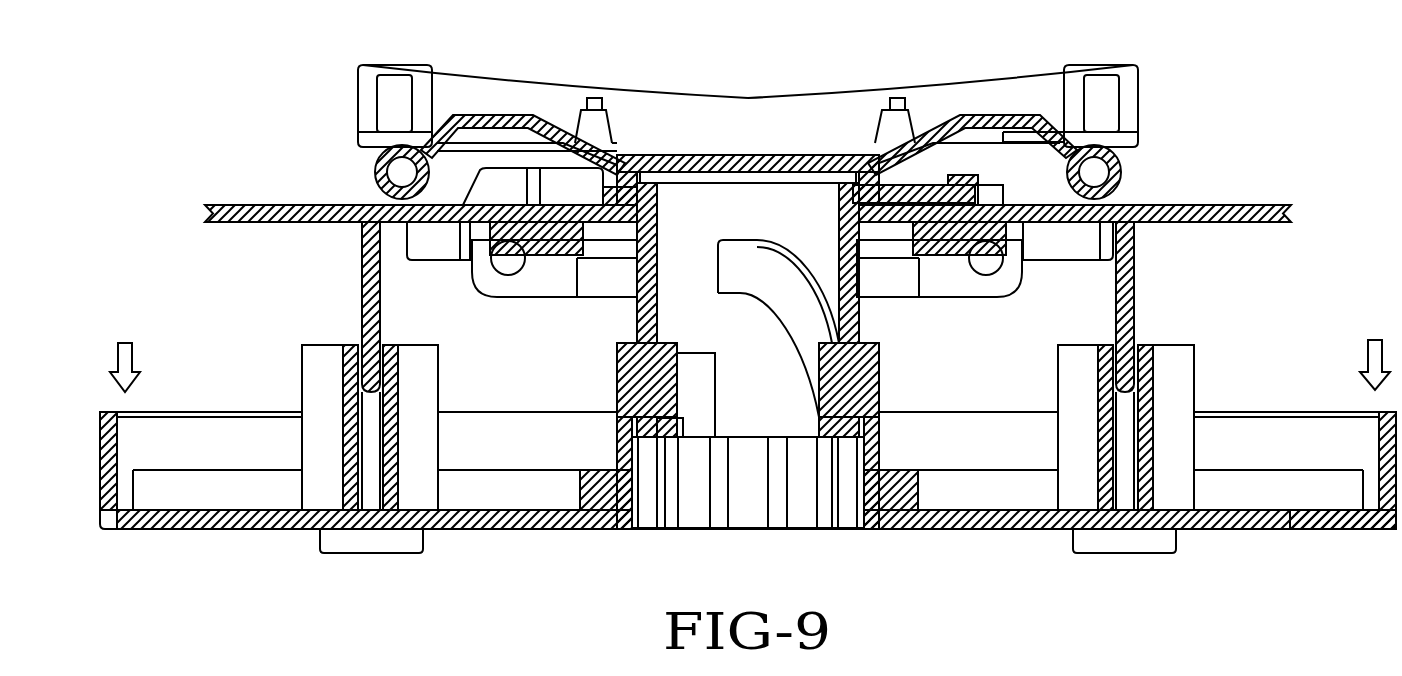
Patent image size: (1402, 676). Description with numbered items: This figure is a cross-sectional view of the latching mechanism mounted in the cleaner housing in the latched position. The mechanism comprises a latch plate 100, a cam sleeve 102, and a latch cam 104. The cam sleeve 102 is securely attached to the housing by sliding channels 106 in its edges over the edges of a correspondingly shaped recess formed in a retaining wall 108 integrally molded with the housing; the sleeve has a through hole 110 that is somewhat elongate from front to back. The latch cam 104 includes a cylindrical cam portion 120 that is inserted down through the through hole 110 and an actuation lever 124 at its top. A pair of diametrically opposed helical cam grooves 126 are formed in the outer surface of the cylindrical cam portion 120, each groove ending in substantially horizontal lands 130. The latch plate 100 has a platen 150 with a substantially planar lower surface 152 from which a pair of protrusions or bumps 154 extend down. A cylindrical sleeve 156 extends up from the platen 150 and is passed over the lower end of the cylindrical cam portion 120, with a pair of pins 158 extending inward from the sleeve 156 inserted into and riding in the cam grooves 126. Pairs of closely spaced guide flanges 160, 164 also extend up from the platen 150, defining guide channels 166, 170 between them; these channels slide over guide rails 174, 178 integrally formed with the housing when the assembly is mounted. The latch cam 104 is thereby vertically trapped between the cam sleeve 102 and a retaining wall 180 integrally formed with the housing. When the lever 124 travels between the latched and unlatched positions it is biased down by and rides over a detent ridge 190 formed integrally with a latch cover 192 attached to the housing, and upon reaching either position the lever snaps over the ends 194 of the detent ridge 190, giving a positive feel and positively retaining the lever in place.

The latch plate 100 is at (208, 530).
The cam sleeve 102 is at (995, 288).
The latch cam 104 is at (713, 207).
The sliding channels 106 is at (532, 240).
The retaining wall 108 is at (1197, 207).
The through hole 110 is at (855, 212).
The cylindrical cam portion 120 is at (762, 428).
The actuation lever 124 is at (452, 165).
The helical cam grooves 126 is at (775, 312).
The horizontal land 130 is at (728, 267).
The platen 150 is at (1293, 523).
The planar lower surface 152 is at (952, 527).
The protrusions or bumps 154 is at (405, 550).
The cylindrical sleeve 156 is at (632, 430).
The pins 158 is at (647, 385).
The guide flanges 160 is at (302, 370).
The guide flanges 164 is at (1192, 373).
The guide channel 166 is at (372, 500).
The guide channel 170 is at (1125, 497).
The guide rail 174 is at (367, 313).
The guide rail 178 is at (1137, 305).
The retaining wall 180 is at (567, 120).
The detent ridge 190 is at (758, 155).
The latch cover 192 is at (357, 80).
The ends of the detent ridge 194 is at (610, 137).